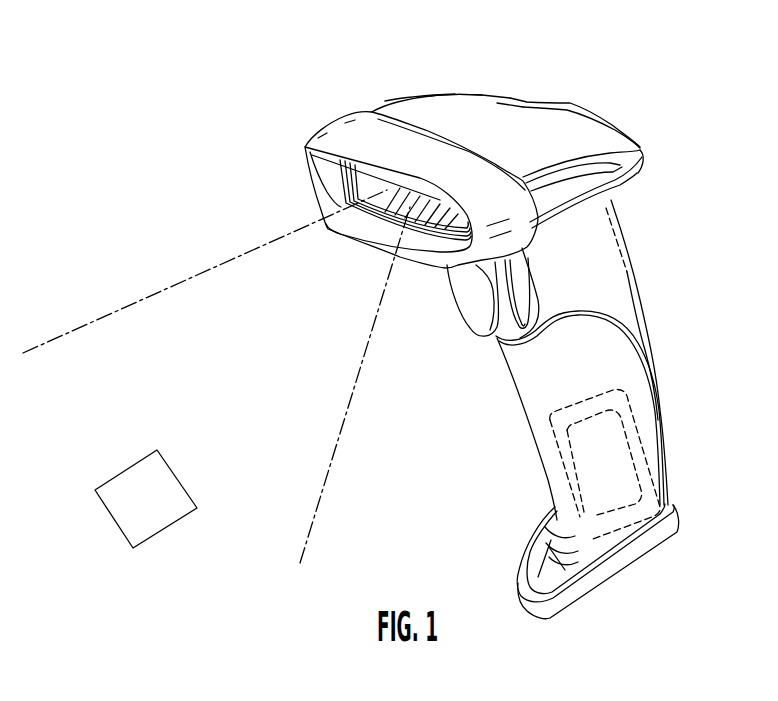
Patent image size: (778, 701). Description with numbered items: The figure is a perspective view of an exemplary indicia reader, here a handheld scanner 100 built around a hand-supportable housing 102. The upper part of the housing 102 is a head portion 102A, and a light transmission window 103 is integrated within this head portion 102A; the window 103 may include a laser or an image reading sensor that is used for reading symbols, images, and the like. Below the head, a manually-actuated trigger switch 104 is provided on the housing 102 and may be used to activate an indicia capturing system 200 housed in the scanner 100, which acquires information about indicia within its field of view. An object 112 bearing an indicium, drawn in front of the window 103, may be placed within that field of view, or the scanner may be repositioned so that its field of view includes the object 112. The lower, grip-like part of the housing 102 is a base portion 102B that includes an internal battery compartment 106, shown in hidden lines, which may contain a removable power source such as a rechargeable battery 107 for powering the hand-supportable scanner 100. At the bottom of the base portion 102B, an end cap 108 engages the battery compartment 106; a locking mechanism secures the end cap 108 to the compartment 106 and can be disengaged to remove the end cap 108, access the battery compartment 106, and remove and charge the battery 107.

The handheld scanner 100 is at (628, 107).
The hand-supportable housing 102 is at (643, 386).
The head portion 102A is at (489, 130).
The base portion 102B is at (673, 510).
The light transmission window 103 is at (374, 183).
The manually-actuated trigger switch 104 is at (473, 309).
The battery compartment 106 is at (548, 418).
The rechargeable battery 107 is at (580, 463).
The end cap 108 is at (643, 565).
The object 112 is at (137, 480).
The indicia capturing system 200 is at (443, 120).